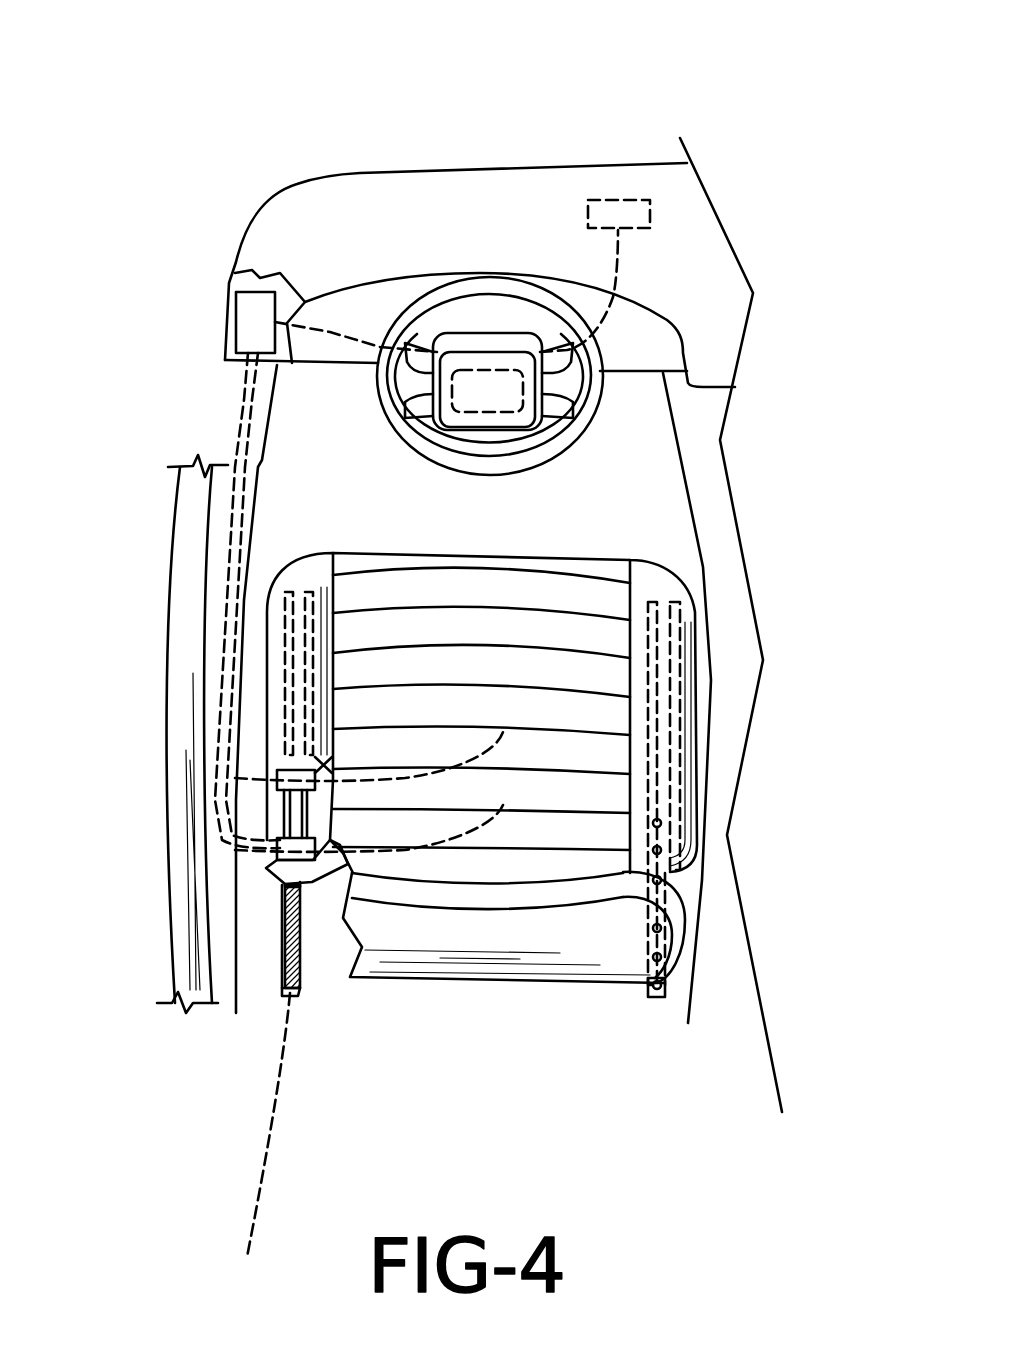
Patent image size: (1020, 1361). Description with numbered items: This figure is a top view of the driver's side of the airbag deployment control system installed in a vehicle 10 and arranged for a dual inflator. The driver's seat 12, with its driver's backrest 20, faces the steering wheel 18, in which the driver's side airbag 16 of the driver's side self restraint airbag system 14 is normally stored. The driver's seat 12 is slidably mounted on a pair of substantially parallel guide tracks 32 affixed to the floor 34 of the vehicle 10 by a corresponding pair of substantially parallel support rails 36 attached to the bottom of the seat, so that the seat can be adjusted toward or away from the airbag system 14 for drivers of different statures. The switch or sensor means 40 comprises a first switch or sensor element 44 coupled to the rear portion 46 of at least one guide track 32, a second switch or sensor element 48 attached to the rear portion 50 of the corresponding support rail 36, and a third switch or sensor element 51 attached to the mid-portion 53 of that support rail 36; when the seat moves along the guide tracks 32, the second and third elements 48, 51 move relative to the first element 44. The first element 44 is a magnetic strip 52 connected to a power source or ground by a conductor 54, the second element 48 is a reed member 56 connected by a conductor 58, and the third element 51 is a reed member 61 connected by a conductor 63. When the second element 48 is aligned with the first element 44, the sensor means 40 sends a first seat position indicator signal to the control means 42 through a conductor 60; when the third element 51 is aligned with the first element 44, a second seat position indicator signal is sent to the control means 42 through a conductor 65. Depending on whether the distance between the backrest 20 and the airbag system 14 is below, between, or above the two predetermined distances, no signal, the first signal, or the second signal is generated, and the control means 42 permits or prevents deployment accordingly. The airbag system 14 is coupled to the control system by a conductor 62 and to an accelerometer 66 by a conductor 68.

The vehicle 10 is at (228, 143).
The driver's seat 12 is at (724, 748).
The driver's side self restraint airbag system 14 is at (482, 333).
The driver's side airbag 16 is at (521, 402).
The steering wheel 18 is at (447, 303).
The driver's backrest 20 is at (562, 962).
The guide tracks 32 is at (290, 628).
The floor 34 is at (268, 540).
The support rails 36 is at (293, 675).
The switch or sensor means 40 is at (250, 858).
The control means 42 is at (247, 322).
The first switch or sensor element 44 is at (278, 938).
The rear portion 46 is at (285, 988).
The second switch or sensor element 48 is at (262, 878).
The rear portion 50 is at (280, 769).
The third switch or sensor element 51 is at (278, 791).
The magnetic strip 52 is at (288, 990).
The mid-portion 53 is at (300, 772).
The conductor 54 is at (277, 1085).
The reed member 56 is at (292, 853).
The conductor 58 is at (403, 850).
The conductor 60 is at (247, 412).
The reed member 61 is at (305, 770).
The conductor 62 is at (337, 332).
The conductor 63 is at (405, 780).
The conductor 65 is at (240, 445).
The accelerometer 66 is at (612, 200).
The conductor 68 is at (648, 256).